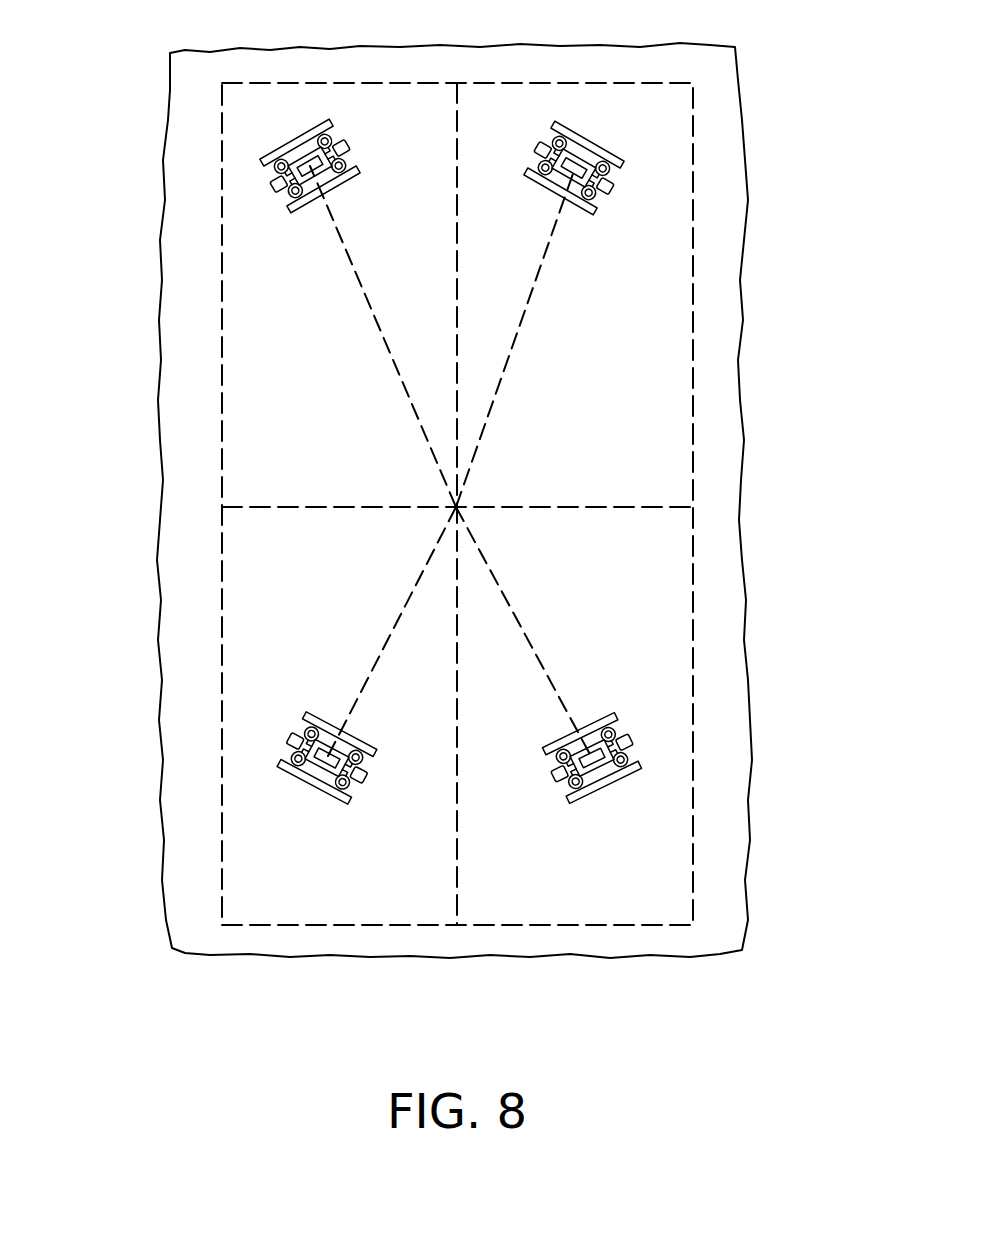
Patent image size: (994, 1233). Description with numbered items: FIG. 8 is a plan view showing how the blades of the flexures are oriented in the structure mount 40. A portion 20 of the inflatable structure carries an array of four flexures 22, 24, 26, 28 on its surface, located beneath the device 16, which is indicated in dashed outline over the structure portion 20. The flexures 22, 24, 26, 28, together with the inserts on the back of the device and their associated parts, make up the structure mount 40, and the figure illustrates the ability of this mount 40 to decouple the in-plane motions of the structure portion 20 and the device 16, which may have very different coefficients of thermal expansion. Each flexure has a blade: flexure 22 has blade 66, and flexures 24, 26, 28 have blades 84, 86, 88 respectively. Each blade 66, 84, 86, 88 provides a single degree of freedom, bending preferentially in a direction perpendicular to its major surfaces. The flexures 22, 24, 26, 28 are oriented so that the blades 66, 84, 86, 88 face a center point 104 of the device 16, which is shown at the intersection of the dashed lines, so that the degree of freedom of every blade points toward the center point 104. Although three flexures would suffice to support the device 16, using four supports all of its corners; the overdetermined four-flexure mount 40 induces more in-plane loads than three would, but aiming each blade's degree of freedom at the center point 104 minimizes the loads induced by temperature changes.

The device 16 is at (692, 200).
The inflatable structure portion 20 is at (185, 440).
The flexure 22 is at (250, 765).
The flexure 24 is at (310, 100).
The flexure 26 is at (572, 102).
The flexure 28 is at (652, 788).
The structure mount 40 is at (180, 143).
The blade 66 is at (331, 758).
The blade 84 is at (316, 160).
The blade 86 is at (577, 160).
The blade 88 is at (598, 750).
The center point 104 is at (459, 503).